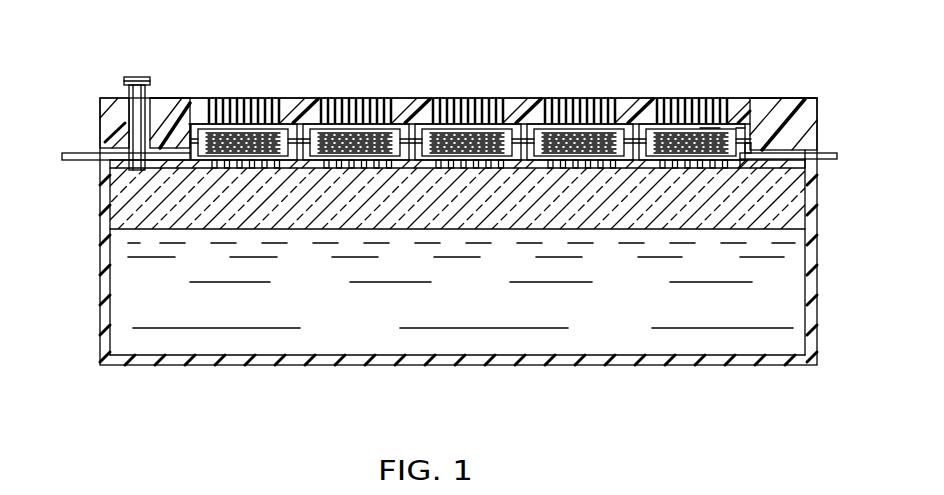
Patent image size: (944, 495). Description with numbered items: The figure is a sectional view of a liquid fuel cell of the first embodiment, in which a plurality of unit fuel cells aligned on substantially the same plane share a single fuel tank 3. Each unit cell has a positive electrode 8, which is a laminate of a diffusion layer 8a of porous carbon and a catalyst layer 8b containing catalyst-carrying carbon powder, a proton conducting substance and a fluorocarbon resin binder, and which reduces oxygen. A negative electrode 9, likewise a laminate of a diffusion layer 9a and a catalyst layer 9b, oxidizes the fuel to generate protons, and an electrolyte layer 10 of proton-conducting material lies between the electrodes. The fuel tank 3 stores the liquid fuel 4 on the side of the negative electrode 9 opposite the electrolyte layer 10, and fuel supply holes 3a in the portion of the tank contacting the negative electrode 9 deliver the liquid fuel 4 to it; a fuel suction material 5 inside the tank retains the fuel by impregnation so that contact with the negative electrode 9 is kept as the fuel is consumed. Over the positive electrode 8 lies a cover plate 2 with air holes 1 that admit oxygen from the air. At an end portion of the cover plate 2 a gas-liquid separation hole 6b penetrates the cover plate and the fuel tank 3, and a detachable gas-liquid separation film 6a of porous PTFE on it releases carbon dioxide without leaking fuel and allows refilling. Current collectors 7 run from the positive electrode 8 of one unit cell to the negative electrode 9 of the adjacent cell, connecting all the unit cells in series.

The air holes 1 is at (220, 103).
The cover plate 2 is at (290, 107).
The fuel tank 3 is at (112, 253).
The fuel supply holes 3a is at (450, 102).
The liquid fuel 4 is at (137, 308).
The fuel suction material 5 is at (120, 197).
The gas-liquid separation film 6a is at (130, 78).
The gas-liquid separation hole 6b is at (133, 118).
The current collector 7 is at (77, 155).
The positive electrode 8 is at (739, 69).
The diffusion layer 8a is at (710, 127).
The catalyst layer 8b is at (755, 91).
The negative electrode 9 is at (821, 200).
The diffusion layer 9a is at (738, 163).
The catalyst layer 9b is at (805, 163).
The electrolyte layer 10 is at (765, 102).